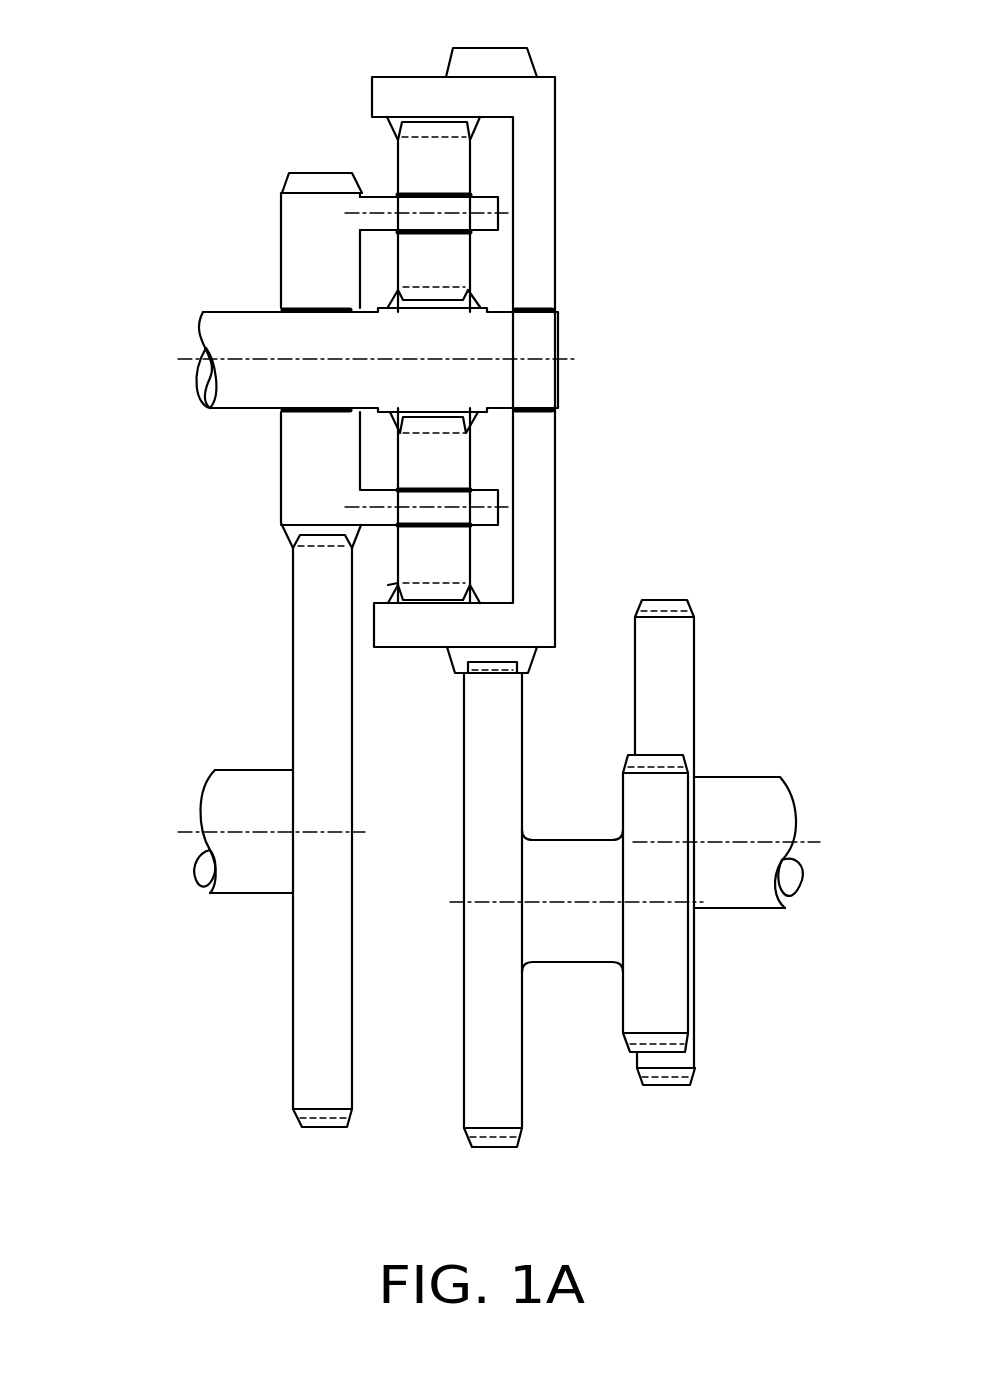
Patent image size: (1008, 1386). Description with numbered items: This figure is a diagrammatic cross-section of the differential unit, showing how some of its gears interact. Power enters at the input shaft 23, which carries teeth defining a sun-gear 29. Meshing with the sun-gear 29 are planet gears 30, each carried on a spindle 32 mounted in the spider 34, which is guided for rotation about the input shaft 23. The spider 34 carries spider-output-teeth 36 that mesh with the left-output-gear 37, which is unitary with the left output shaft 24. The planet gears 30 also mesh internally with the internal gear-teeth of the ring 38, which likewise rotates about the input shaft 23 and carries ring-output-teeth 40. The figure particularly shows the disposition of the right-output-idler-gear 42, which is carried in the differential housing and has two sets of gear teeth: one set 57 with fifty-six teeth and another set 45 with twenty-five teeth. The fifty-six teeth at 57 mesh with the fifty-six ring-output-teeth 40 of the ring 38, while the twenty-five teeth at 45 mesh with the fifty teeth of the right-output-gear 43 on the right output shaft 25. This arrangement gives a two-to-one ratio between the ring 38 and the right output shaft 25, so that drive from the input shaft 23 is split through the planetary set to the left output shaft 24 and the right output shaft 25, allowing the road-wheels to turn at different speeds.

The input shaft 23 is at (223, 337).
The left output shaft 24 is at (248, 865).
The right output shaft 25 is at (743, 815).
The sun-gear 29 is at (480, 303).
The planet gears 30 is at (418, 163).
The spindles 32 is at (490, 497).
The spider 34 is at (305, 260).
The spider-output-teeth 36 is at (300, 187).
The left-output-gear 37 is at (320, 1118).
The ring 38 is at (528, 200).
The ring-output-teeth 40 is at (502, 67).
The right-output-idler-gear 42 is at (488, 1030).
The right-output-gear 43 is at (670, 610).
The set of gear teeth 45 is at (667, 1043).
The set of gear teeth 57 is at (497, 1133).